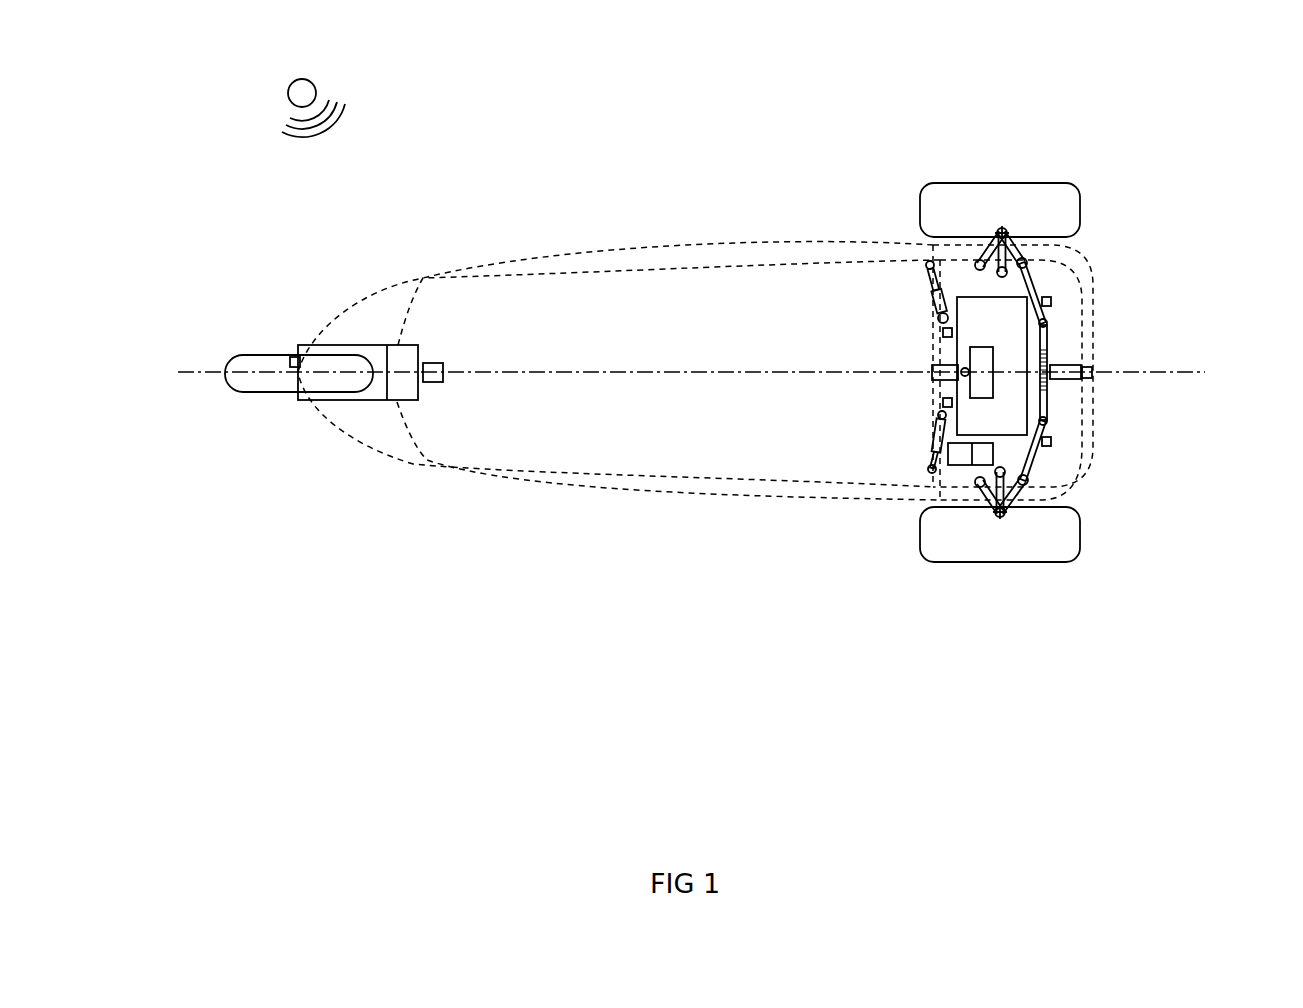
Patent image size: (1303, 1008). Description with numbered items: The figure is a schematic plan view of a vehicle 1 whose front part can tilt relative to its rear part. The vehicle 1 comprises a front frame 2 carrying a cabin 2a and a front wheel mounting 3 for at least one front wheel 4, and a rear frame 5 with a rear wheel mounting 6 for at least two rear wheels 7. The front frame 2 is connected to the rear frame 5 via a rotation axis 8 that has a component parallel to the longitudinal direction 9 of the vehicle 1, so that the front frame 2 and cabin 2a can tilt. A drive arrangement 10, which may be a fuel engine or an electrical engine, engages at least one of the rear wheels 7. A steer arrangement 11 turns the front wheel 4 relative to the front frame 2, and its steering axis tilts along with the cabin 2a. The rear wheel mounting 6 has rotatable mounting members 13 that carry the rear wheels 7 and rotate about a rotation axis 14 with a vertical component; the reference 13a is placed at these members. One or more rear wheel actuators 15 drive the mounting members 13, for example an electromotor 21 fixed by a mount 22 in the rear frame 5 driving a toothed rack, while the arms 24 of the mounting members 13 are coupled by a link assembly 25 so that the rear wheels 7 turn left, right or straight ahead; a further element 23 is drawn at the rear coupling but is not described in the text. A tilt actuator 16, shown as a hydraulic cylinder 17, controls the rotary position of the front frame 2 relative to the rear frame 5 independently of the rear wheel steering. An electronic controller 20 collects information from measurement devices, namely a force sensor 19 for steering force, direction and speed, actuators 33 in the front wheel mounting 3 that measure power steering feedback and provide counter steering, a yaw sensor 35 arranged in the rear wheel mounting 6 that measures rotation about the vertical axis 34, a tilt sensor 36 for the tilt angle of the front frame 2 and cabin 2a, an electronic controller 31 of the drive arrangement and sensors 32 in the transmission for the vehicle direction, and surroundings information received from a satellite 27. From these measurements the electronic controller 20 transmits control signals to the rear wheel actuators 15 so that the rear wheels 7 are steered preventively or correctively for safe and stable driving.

The vehicle 1 is at (317, 565).
The front frame 2 is at (525, 470).
The cabin 2a is at (592, 494).
The front wheel mounting 3 is at (357, 342).
The front wheel 4 is at (260, 396).
The rear frame 5 is at (1063, 325).
The rear wheel mounting 6 is at (1018, 243).
The rear wheel 7 is at (957, 564).
The rotation axis 8 is at (931, 366).
The longitudinal direction 9 is at (199, 375).
The drive arrangement 10 is at (1034, 290).
The steer arrangement 11 is at (403, 366).
The rotatable mounting member 13 is at (1012, 250).
The mounting member arm 13a is at (990, 247).
The rotation axis 14 is at (1002, 226).
The rear wheel actuator 15 is at (1026, 356).
The tilt actuator 16 is at (955, 403).
The hydraulic cylinder 17 is at (950, 435).
The force sensor 19 is at (441, 384).
The electronic controller 20 is at (1031, 268).
The electromotor 21 is at (1075, 367).
The mount 22 is at (1096, 373).
The position sensor 23 is at (1049, 384).
The arm 24 is at (1053, 294).
The link assembly 25 is at (988, 352).
The satellite 27 is at (313, 82).
The electronic controller of drive arrangement 31 is at (938, 468).
The sensors 32 is at (955, 463).
The actuator 33 is at (292, 355).
The vertical axis 34 is at (960, 364).
The yaw sensor 35 is at (935, 380).
The tilt sensor 36 is at (959, 379).